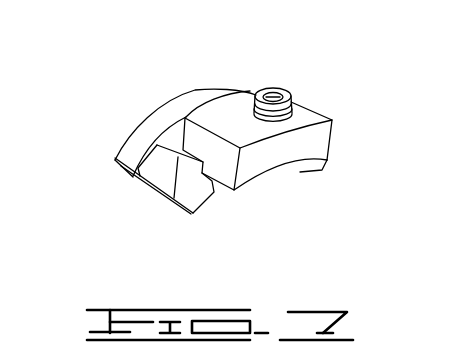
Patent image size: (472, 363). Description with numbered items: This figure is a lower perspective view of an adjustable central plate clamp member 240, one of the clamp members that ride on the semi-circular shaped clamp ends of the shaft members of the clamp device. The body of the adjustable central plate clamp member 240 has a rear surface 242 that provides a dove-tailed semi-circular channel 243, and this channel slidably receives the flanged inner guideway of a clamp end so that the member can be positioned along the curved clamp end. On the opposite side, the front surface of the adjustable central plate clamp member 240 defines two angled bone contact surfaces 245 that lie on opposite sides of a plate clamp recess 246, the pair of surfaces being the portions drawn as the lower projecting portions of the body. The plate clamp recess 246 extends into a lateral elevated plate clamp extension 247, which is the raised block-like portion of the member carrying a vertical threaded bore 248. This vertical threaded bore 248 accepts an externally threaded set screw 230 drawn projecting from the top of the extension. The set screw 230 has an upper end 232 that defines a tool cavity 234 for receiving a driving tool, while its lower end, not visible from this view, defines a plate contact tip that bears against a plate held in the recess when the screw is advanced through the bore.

The externally threaded set screw 230 is at (252, 92).
The upper end 232 is at (264, 88).
The tool cavity 234 is at (281, 88).
The adjustable central plate clamp member 240 is at (343, 78).
The rear surface 242 is at (138, 148).
The dove-tailed semi-circular channel 243 is at (138, 180).
The angled bone contact surfaces 245 is at (264, 173).
The plate clamp recess 246 is at (262, 176).
The lateral elevated plate clamp extension 247 is at (327, 137).
The vertical threaded bore 248 is at (299, 105).